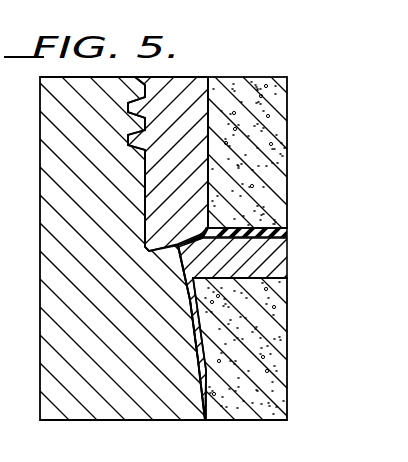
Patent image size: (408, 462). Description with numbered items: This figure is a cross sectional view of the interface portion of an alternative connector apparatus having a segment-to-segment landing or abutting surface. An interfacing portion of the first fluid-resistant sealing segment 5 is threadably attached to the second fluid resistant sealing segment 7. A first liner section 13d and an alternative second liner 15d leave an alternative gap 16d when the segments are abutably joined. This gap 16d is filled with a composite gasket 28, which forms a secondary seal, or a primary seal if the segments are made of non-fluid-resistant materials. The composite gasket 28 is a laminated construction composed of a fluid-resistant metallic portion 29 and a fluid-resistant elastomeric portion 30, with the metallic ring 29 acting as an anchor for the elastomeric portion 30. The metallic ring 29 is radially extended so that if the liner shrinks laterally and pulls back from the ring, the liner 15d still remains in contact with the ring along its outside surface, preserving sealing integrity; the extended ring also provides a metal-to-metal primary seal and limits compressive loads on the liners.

The second fluid resistant sealing segment 7 is at (40, 262).
The first fluid-resistant sealing segment 5 is at (211, 61).
The first liner section 13d is at (287, 164).
The alternative gap 16d is at (298, 229).
The alternative metallic portion 29 is at (287, 263).
The alternative elastomeric portion 30 is at (202, 229).
The composite gasket 28 is at (178, 276).
The second liner 15d is at (287, 356).